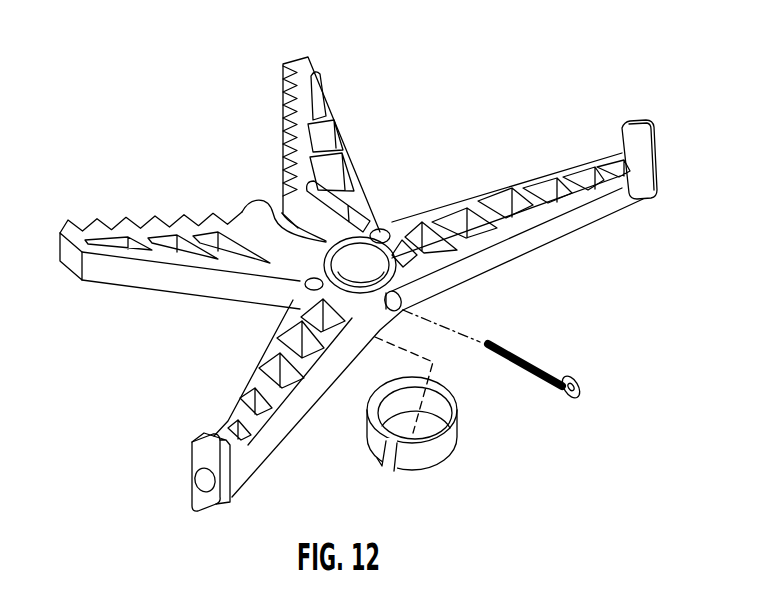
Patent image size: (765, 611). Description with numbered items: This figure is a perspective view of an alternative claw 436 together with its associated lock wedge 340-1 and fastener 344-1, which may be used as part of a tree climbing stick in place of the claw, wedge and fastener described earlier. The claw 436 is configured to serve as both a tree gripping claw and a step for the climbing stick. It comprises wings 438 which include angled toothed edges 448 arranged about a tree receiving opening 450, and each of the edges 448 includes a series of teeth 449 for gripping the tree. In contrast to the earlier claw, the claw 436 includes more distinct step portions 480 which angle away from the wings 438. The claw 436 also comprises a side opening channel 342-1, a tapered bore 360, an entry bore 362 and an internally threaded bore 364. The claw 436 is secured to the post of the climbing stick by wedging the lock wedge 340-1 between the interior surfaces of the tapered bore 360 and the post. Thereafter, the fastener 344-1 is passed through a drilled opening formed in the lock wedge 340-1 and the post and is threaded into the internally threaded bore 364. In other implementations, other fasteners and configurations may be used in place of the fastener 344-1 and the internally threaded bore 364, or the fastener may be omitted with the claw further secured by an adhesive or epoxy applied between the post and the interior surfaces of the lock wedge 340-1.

The tree receiving opening 450 is at (178, 130).
The angled toothed edges 448 is at (291, 112).
The teeth 449 is at (157, 214).
The claw 436 is at (348, 110).
The wings 438 is at (351, 155).
The tapered bore 360 is at (371, 257).
The side opening channel 342-1 is at (270, 212).
The internally threaded bore 364 is at (287, 270).
The entry bore 362 is at (397, 300).
The step portions 480 is at (566, 218).
The fastener 344-1 is at (560, 372).
The lock wedge 340-1 is at (452, 438).